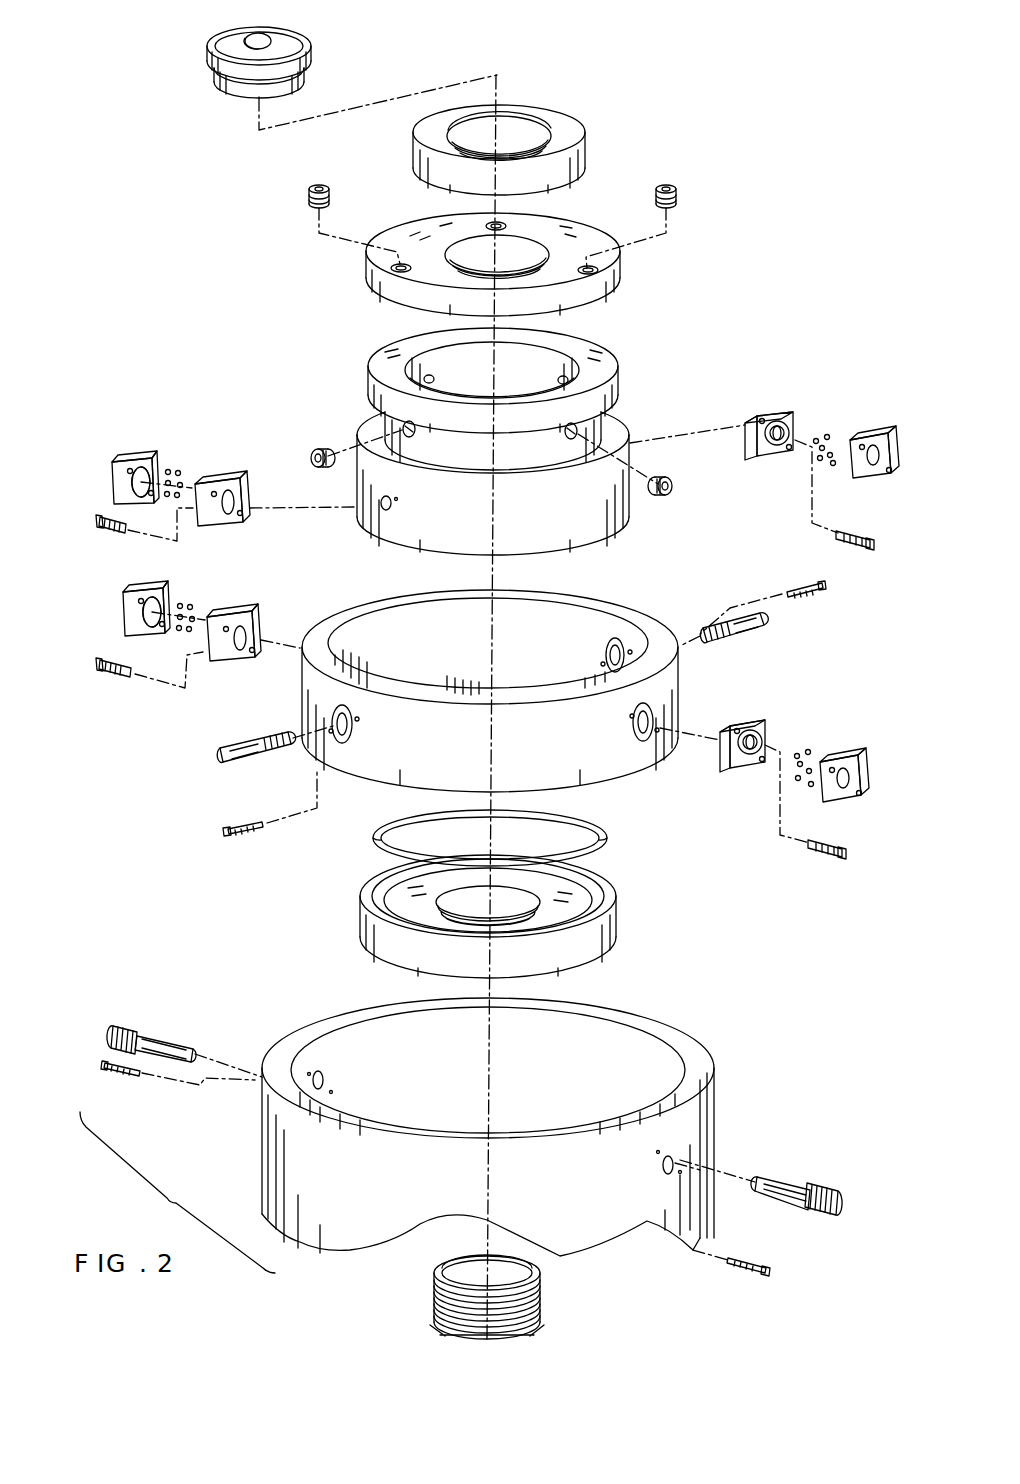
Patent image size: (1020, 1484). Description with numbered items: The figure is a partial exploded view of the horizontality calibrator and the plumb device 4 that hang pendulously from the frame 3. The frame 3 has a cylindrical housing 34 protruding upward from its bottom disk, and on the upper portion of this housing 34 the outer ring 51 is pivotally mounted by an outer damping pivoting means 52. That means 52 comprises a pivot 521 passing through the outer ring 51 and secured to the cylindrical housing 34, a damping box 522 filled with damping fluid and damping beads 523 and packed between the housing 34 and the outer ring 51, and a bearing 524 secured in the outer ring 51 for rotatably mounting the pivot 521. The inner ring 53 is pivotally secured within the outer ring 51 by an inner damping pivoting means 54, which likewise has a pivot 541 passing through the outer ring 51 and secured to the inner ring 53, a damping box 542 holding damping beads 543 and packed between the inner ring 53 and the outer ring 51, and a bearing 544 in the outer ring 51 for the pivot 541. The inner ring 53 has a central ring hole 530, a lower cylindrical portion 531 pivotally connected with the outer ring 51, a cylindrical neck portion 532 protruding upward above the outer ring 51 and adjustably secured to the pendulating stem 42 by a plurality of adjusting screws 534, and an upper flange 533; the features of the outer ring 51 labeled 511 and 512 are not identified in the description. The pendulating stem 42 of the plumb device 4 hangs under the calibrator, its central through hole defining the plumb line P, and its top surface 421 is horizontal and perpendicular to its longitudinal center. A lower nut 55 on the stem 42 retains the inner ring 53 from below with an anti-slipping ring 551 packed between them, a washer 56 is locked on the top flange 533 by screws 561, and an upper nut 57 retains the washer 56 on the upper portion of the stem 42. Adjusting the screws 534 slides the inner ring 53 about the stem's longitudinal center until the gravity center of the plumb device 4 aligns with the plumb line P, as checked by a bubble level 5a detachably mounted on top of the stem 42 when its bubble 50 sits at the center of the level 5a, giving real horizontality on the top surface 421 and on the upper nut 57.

The bubble 50 is at (266, 36).
The bubble level 5a is at (306, 50).
The upper nut 57 is at (590, 130).
The screws 561 is at (678, 192).
The washer 56 is at (628, 243).
The central ring hole 530 is at (440, 353).
The cylindrical neck portion 532 is at (540, 440).
The upper flange 533 is at (385, 358).
The inner ring 53 is at (516, 408).
The inner damping pivoting means 54 is at (497, 443).
The damping box 542 is at (795, 422).
The damping beads 543 is at (830, 470).
The adjusting screws 534 is at (680, 490).
The lower cylindrical portion 531 is at (615, 520).
The outer damping pivoting means 52 is at (494, 708).
The inner bore of ring 512 is at (403, 622).
The outer ring 51 is at (537, 687).
The bearing 544 is at (620, 640).
The pivot 541 is at (760, 645).
The bearing 524 is at (650, 720).
The damping box 522 is at (838, 752).
The damping beads 523 is at (805, 788).
The outer wall of ring 511 is at (378, 767).
The plumb line P is at (553, 832).
The anti-slipping ring 551 is at (605, 835).
The lower nut 55 is at (598, 942).
The pivot 521 is at (172, 1035).
The frame 3 is at (465, 1117).
The cylindrical housing 34 is at (292, 1148).
The pendulating stem 42 is at (433, 1298).
The plumb device 4 is at (507, 1297).
The top surface 421 is at (540, 1268).